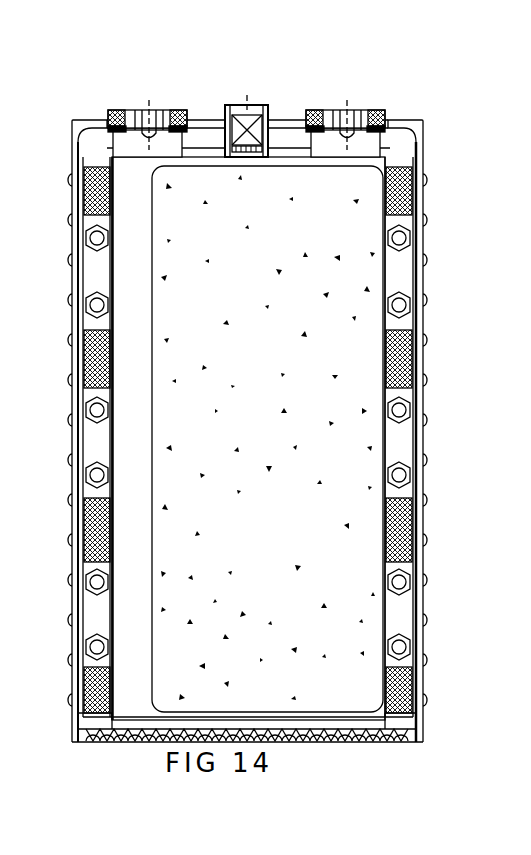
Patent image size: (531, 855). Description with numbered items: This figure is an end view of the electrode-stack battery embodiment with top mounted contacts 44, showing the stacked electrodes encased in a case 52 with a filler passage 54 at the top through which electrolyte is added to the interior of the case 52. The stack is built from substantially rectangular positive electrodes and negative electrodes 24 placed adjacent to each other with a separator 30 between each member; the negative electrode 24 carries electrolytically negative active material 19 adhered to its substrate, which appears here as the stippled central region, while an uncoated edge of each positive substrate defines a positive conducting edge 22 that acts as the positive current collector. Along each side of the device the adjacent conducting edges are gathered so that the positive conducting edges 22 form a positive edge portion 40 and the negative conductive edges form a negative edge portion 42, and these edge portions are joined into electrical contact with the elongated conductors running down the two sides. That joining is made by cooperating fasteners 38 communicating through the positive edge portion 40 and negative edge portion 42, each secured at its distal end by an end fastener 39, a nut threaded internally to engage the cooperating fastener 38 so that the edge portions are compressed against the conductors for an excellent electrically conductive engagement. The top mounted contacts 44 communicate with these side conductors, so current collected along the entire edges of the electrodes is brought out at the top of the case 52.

The electrolytically negative active material 19 is at (297, 510).
The positive conducting edge 22 is at (90, 180).
The negative electrode 24 is at (420, 182).
The separator 30 is at (135, 369).
The cooperating fastener 38 is at (92, 238).
The end fastener 39 is at (72, 258).
The positive edge portion 40 is at (80, 706).
The negative edge portion 42 is at (78, 706).
The top mounted contact 44 is at (150, 108).
The case 52 is at (72, 170).
The filler passage 54 is at (248, 104).